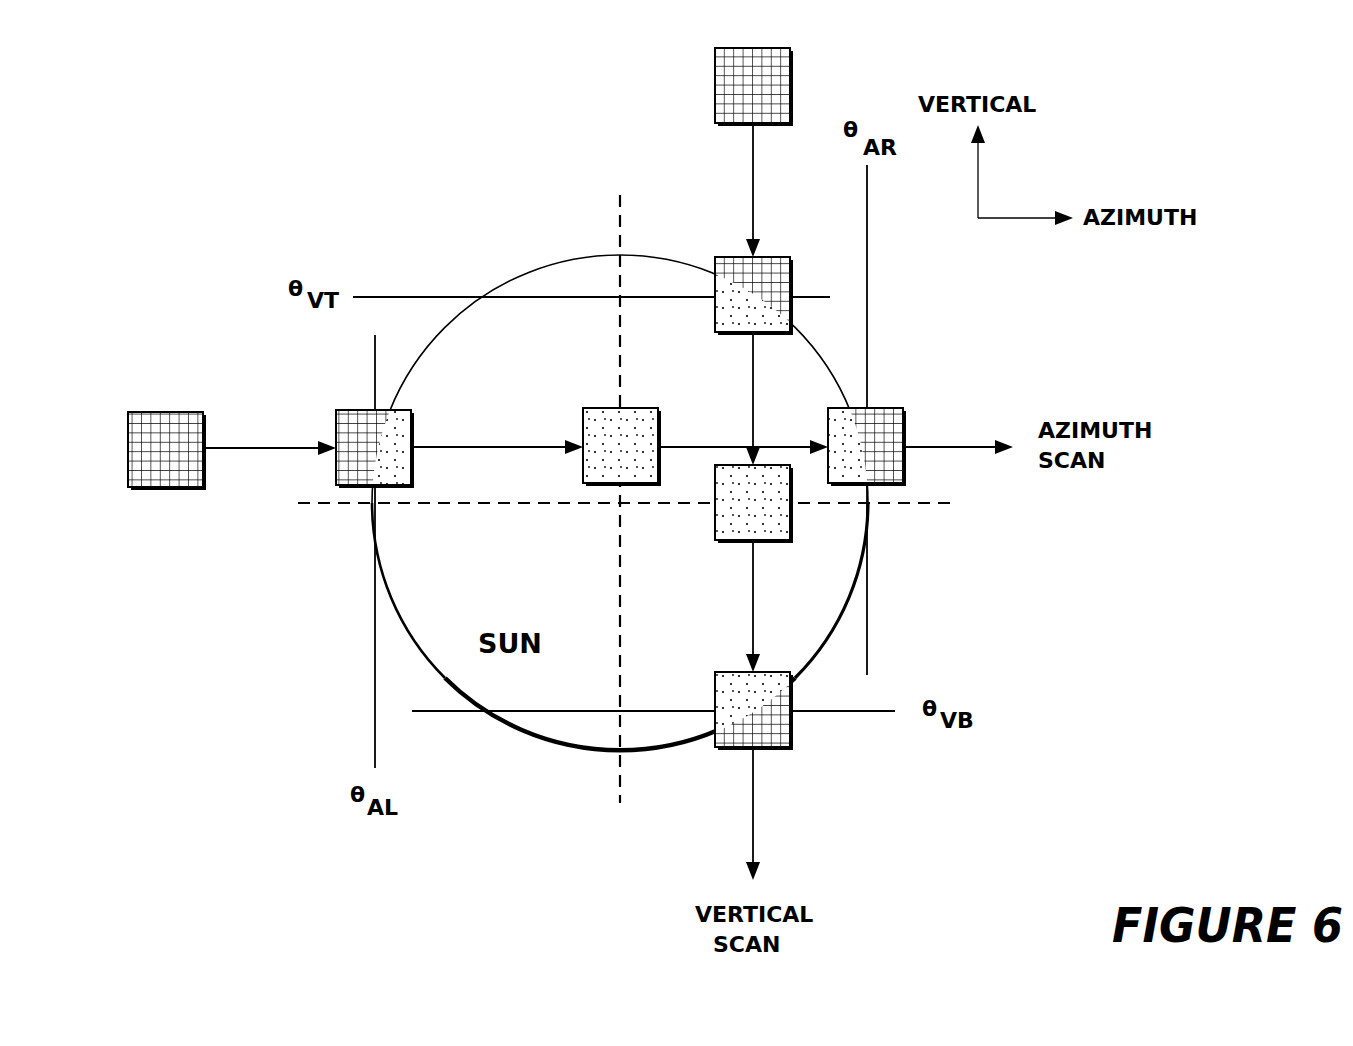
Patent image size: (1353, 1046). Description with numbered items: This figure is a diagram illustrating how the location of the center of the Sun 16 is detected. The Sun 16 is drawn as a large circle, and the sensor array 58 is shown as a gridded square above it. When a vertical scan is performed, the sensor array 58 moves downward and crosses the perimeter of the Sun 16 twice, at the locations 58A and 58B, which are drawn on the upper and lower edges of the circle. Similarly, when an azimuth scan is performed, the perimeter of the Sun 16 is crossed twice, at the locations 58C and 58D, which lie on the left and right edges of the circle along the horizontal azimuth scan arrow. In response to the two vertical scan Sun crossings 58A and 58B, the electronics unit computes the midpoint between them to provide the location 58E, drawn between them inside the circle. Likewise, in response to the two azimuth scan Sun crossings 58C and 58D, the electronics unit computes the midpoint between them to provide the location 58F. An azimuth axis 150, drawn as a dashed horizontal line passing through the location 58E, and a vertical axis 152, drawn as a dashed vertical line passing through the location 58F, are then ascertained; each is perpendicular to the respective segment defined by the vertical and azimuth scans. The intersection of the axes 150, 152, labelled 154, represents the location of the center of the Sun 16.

The Sun 16 is at (423, 355).
The sensor array 58 is at (715, 85).
The vertical scan Sun crossing location 58A is at (715, 337).
The vertical scan Sun crossing location 58B is at (715, 672).
The azimuth scan Sun crossing location 58C is at (412, 410).
The azimuth scan Sun crossing location 58D is at (828, 408).
The midpoint location of vertical scan crossings 58E is at (793, 543).
The midpoint location of azimuth scan crossings 58F is at (583, 410).
The azimuth axis 150 is at (658, 506).
The vertical axis 152 is at (617, 560).
The intersection of axes 154 is at (610, 508).